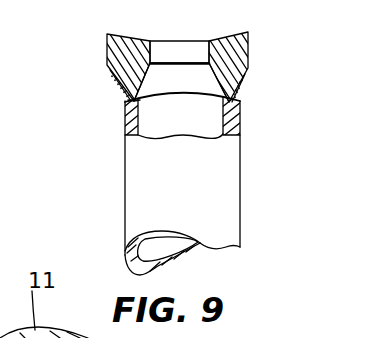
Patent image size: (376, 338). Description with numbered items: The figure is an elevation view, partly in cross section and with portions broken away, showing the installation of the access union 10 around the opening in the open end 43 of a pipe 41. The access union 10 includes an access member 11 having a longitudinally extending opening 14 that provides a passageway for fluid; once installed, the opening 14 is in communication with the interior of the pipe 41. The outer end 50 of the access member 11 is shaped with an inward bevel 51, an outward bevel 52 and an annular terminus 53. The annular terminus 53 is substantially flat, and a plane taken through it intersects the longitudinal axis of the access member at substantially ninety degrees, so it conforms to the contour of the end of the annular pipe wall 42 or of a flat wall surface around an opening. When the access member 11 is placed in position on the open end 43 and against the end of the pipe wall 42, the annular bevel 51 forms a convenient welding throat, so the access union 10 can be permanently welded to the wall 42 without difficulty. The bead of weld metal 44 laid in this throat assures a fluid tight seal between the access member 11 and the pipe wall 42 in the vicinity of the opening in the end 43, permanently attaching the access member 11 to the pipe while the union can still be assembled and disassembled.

The access union 10 is at (86, 32).
The access member 11 is at (108, 43).
The opening 14 is at (193, 50).
The pipe 41 is at (132, 180).
The annular pipe wall 42 is at (226, 120).
The open end 43 is at (120, 93).
The bead of weld metal 44 is at (238, 96).
The outer end 50 is at (250, 44).
The inward bevel 51 is at (107, 72).
The outward bevel 52 is at (152, 71).
The annular terminus 53 is at (172, 100).